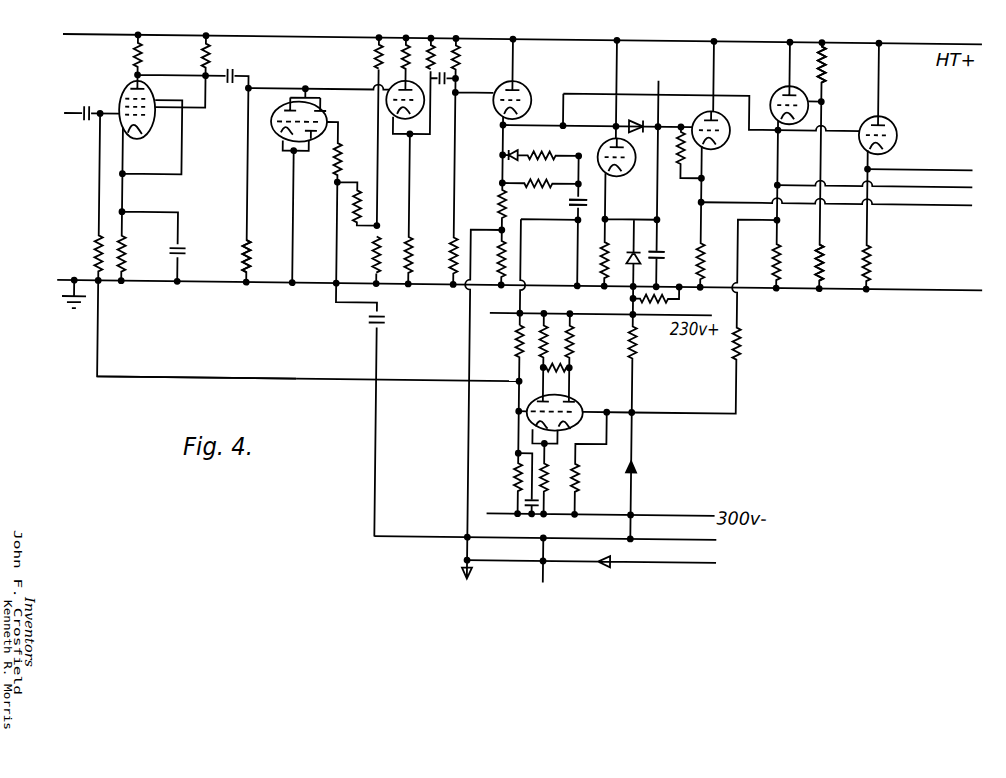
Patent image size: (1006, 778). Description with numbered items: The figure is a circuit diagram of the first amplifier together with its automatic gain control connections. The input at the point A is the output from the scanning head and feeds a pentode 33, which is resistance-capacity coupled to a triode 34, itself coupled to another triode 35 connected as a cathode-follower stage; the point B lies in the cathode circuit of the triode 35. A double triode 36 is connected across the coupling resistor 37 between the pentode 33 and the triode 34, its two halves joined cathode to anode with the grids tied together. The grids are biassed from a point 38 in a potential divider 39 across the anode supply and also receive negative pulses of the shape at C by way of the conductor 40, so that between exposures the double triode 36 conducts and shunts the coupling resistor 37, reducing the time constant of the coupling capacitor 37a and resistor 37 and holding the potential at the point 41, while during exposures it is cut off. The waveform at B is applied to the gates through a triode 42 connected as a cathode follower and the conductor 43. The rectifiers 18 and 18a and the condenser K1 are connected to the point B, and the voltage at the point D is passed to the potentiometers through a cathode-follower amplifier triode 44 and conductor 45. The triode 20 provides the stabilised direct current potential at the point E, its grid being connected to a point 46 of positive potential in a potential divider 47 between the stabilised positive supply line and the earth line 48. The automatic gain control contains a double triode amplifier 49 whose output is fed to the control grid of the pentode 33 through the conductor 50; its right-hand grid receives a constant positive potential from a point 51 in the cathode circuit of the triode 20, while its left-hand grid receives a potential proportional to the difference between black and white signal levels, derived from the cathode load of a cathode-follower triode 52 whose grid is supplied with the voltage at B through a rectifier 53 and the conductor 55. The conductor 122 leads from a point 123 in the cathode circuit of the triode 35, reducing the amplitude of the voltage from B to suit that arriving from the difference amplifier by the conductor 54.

The input point A is at (66, 110).
The pentode 33 is at (127, 87).
The coupling capacitor 37a is at (229, 71).
The point 41 is at (250, 79).
The double triode 36 is at (289, 93).
The potential divider 39 is at (374, 50).
The triode 34 is at (387, 98).
The triode 35 is at (521, 80).
The point B is at (501, 121).
The rectifier 53 is at (503, 151).
The conductor 55 is at (540, 213).
The point 123 is at (507, 225).
The cathode-follower triode 52 is at (599, 148).
The rectifier 18 is at (636, 112).
The point D is at (657, 175).
The condenser K1 is at (663, 249).
The cathode-follower amplifier triode 44 is at (703, 101).
The triode 20 is at (785, 81).
The potential divider 47 is at (824, 60).
The point 46 is at (824, 93).
The triode 42 is at (886, 110).
The conductor 43 is at (936, 157).
The point E is at (777, 178).
The point 51 is at (780, 212).
The conductor 45 is at (963, 197).
The earth line 48 is at (866, 282).
The rectifier 18a is at (624, 240).
The double triode amplifier 49 is at (578, 396).
The conductor 50 is at (280, 375).
The conductor 122 is at (471, 356).
The conductor 40 is at (378, 357).
The coupling resistor 37 is at (249, 262).
The point 38 is at (389, 228).
The point C is at (545, 530).
The conductor 54 is at (663, 563).